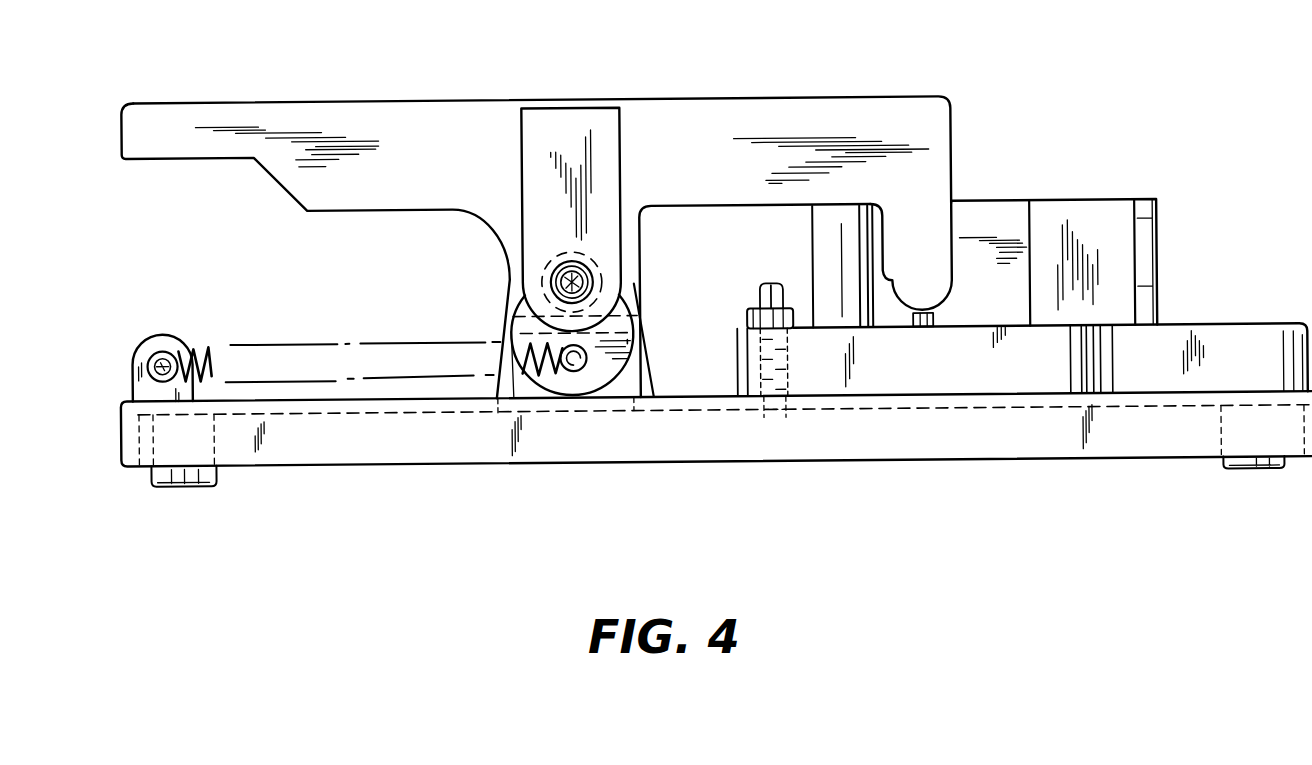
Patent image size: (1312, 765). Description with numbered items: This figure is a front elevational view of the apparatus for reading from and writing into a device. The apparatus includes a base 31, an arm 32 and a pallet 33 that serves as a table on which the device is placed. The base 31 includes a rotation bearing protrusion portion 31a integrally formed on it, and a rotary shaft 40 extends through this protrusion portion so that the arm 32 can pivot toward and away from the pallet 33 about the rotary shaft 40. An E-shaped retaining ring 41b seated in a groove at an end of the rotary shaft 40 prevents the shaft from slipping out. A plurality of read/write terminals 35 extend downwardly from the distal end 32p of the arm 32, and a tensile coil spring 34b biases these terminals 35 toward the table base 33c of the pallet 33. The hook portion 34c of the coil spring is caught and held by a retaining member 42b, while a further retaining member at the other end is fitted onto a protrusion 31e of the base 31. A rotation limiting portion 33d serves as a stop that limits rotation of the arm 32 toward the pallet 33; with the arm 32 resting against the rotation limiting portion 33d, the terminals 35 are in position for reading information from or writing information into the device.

The base 31 is at (352, 444).
The rotation bearing protrusion portion 31a is at (633, 390).
The protrusion 31e is at (141, 347).
The arm 32 is at (697, 117).
The distal end of arm 32p is at (897, 292).
The pallet 33 is at (1257, 345).
The table base 33c is at (985, 337).
The rotation limiting portion 33d is at (836, 213).
The tensile coil spring 34b is at (290, 347).
The hook portion 34c is at (178, 352).
The read/write terminals 35 is at (940, 324).
The rotary shaft 40 is at (566, 272).
The E-shaped retaining ring 41b is at (575, 258).
The retaining member 42b is at (568, 366).